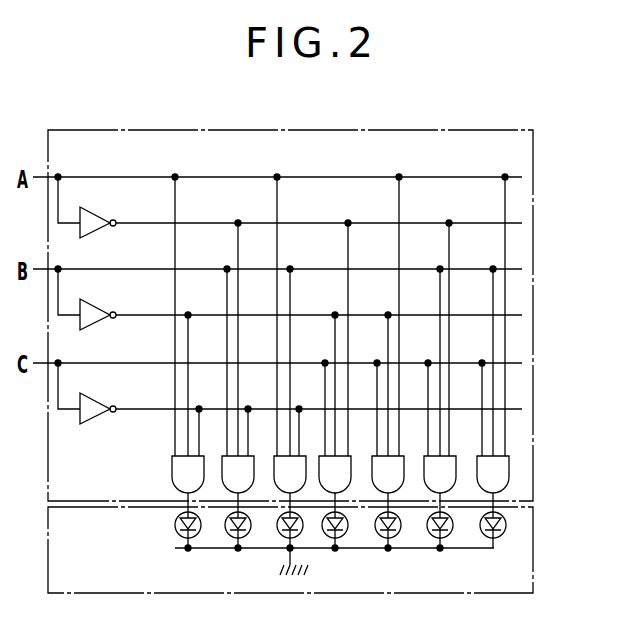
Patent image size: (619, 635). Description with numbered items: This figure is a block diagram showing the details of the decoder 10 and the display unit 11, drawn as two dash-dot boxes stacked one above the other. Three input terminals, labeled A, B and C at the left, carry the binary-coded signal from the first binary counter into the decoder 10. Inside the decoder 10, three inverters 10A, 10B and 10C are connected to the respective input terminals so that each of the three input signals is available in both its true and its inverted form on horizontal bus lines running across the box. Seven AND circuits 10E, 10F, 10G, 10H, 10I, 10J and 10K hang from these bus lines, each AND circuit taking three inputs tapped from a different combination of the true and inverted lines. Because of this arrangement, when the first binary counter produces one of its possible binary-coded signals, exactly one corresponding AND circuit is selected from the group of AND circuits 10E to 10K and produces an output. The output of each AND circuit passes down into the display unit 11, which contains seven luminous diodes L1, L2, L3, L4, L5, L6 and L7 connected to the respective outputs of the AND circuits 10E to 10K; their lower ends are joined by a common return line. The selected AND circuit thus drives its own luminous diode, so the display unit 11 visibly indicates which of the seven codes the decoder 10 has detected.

The decoder 10 is at (533, 160).
The display unit 11 is at (533, 528).
The inverter 10A is at (98, 214).
The inverter 10B is at (98, 306).
The inverter 10C is at (98, 400).
The AND circuit 10E is at (188, 343).
The AND circuit 10F is at (238, 366).
The AND circuit 10G is at (290, 343).
The AND circuit 10H is at (335, 366).
The AND circuit 10I is at (388, 343).
The AND circuit 10J is at (440, 366).
The AND circuit 10K is at (493, 343).
The luminous diode L1 is at (179, 534).
The luminous diode L2 is at (229, 534).
The luminous diode L3 is at (281, 534).
The luminous diode L4 is at (327, 534).
The luminous diode L5 is at (379, 534).
The luminous diode L6 is at (431, 534).
The luminous diode L7 is at (484, 534).